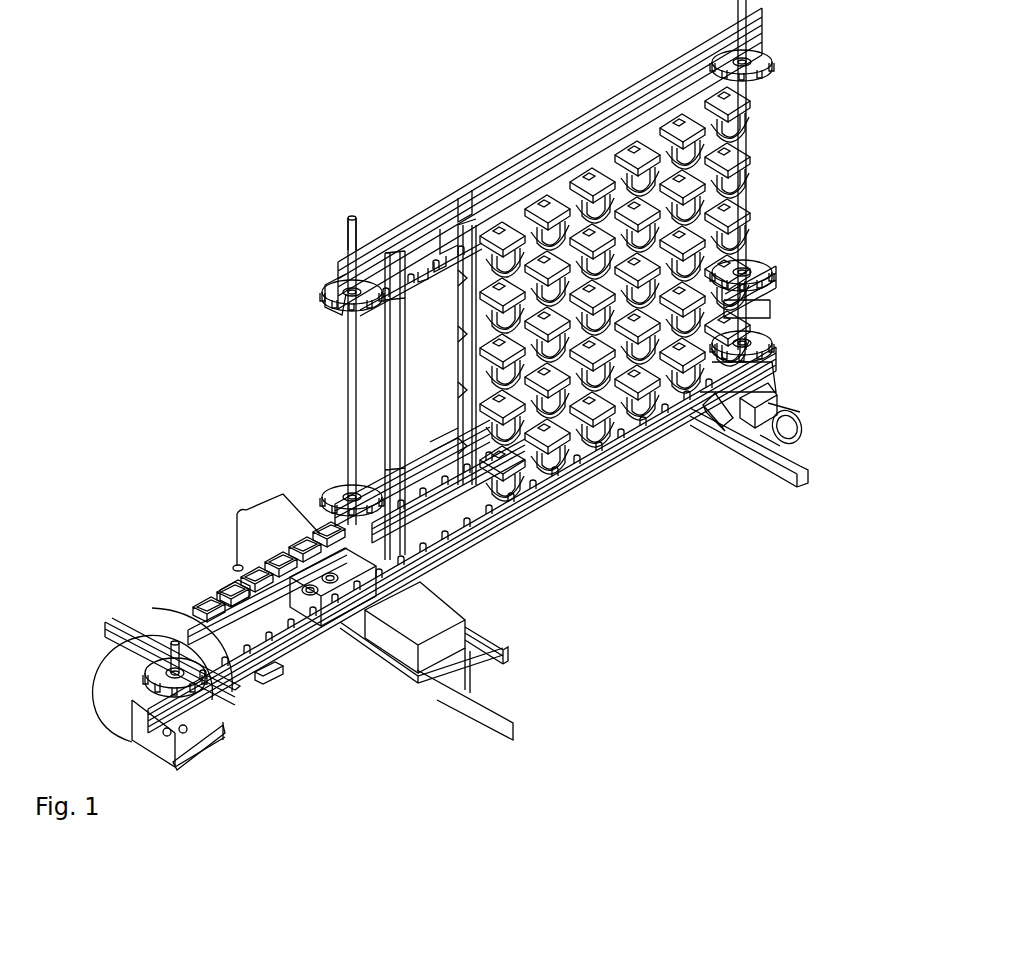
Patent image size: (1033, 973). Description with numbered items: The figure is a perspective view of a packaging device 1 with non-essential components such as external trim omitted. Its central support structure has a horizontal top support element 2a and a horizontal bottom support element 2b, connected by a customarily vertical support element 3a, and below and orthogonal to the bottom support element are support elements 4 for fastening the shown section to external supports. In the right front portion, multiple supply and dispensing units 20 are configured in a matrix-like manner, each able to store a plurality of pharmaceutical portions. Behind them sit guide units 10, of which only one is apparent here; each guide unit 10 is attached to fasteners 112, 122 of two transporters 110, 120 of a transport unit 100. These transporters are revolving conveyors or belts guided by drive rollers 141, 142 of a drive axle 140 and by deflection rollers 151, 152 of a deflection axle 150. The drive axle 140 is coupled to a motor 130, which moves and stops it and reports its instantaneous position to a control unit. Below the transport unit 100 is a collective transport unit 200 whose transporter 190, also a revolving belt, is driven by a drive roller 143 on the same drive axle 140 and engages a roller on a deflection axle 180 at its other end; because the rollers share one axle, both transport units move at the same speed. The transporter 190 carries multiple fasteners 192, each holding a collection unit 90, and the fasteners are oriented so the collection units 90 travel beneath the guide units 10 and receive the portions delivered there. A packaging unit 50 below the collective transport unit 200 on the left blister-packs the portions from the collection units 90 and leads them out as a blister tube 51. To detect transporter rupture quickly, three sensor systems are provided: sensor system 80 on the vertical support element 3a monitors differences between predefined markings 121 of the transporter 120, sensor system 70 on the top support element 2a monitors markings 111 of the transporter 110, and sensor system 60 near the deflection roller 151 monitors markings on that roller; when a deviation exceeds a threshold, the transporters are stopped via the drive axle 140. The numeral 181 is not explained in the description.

The packaging device 1 is at (92, 178).
The horizontal top support element 2a is at (598, 114).
The horizontal bottom support element 2b is at (565, 500).
The vertical support element 3a is at (392, 262).
The support elements 4 is at (510, 658).
The guide unit 10 is at (438, 383).
The supply and dispensing units 20 is at (566, 196).
The packaging unit 50 is at (212, 522).
The blister tube 51 is at (484, 722).
The sensor system 60 is at (372, 258).
The sensor system 70 is at (458, 205).
The sensor system 80 is at (440, 440).
The collection unit 90 is at (215, 600).
The transport unit 100 is at (330, 236).
The transporter 110 is at (332, 306).
The predefined markings 111 is at (424, 275).
The fasteners 112 is at (440, 268).
The transporter 120 is at (762, 302).
The predefined markings 121 is at (436, 415).
The fasteners 122 is at (420, 492).
The motor 130 is at (785, 416).
The drive axle 140 is at (745, 222).
The drive roller 141 is at (760, 60).
The drive roller 142 is at (760, 272).
The drive roller 143 is at (765, 345).
The deflection axle 150 is at (345, 337).
The deflection roller 151 is at (332, 300).
The deflection roller 152 is at (345, 488).
The deflection axle 180 is at (100, 630).
The front sprocket 181 is at (170, 690).
The transporter 190 is at (240, 692).
The fasteners 192 is at (278, 662).
The collective transport unit 200 is at (240, 746).